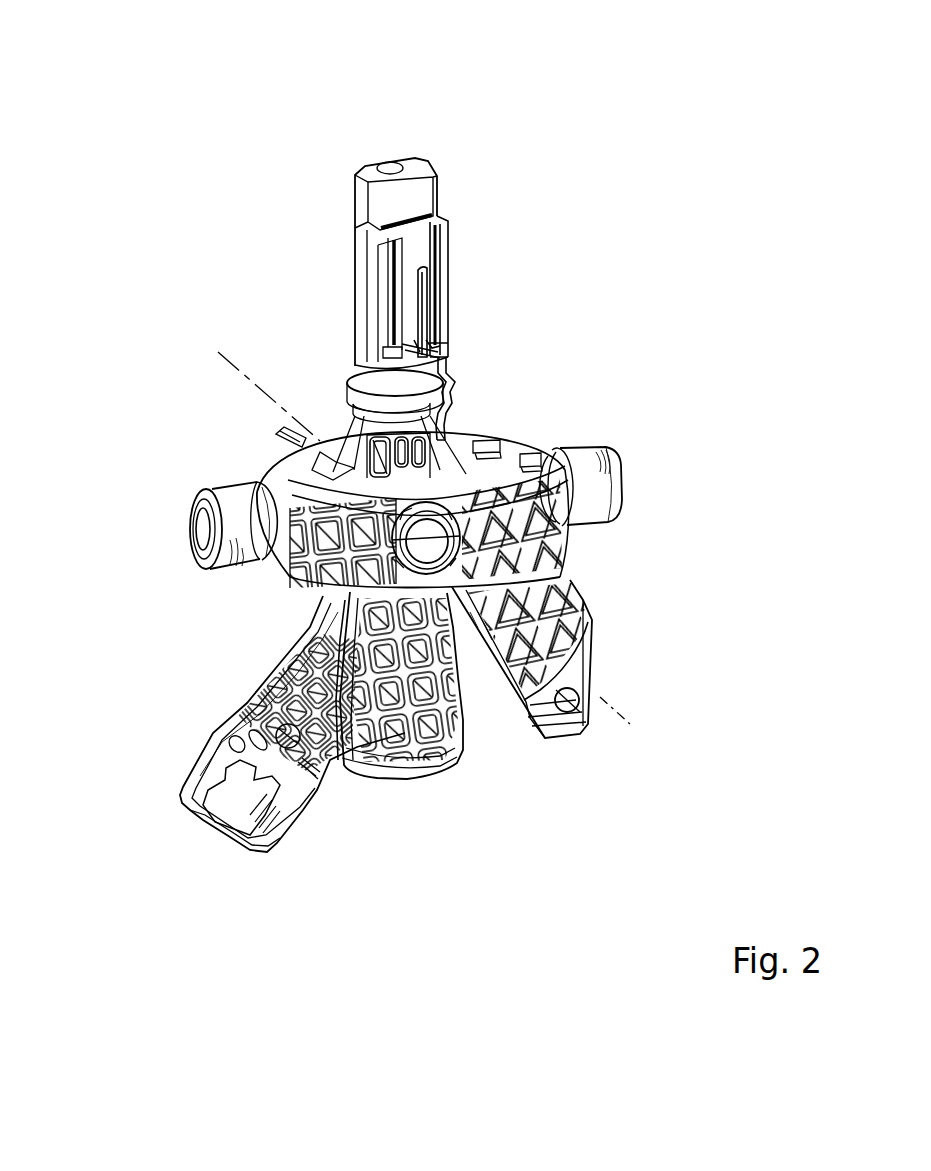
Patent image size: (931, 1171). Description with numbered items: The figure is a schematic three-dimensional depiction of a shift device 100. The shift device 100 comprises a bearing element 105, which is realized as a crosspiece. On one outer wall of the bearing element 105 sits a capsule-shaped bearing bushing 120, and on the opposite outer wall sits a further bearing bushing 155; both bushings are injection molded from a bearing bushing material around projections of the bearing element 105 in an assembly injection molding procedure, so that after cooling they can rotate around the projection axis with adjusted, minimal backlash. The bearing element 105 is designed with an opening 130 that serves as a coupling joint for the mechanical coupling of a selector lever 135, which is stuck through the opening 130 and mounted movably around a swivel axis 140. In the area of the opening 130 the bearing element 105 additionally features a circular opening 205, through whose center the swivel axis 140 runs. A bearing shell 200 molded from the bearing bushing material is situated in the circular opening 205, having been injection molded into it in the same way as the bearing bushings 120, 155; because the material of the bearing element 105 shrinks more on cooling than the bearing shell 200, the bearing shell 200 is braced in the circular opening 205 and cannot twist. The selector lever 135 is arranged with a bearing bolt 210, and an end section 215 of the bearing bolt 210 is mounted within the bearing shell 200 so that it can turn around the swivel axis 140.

The shift device 100 is at (245, 226).
The bearing element 105 is at (593, 656).
The bearing bushing 120 is at (242, 495).
The opening 130 is at (320, 441).
The selector lever 135 is at (421, 204).
The swivel axis 140 is at (613, 717).
The further bearing bushing 155 is at (608, 498).
The bearing shell 200 is at (535, 505).
The circular opening 205 is at (586, 616).
The bearing bolt 210 is at (398, 562).
The end section 215 is at (322, 593).